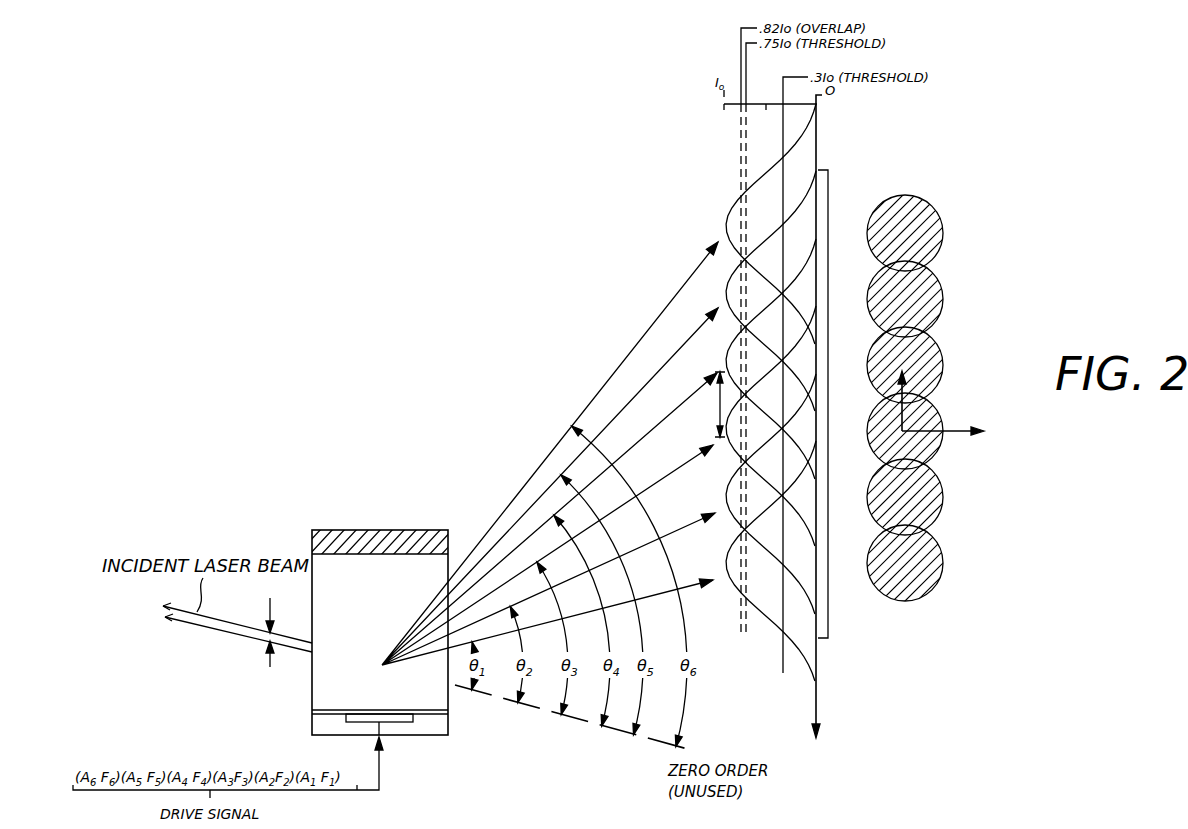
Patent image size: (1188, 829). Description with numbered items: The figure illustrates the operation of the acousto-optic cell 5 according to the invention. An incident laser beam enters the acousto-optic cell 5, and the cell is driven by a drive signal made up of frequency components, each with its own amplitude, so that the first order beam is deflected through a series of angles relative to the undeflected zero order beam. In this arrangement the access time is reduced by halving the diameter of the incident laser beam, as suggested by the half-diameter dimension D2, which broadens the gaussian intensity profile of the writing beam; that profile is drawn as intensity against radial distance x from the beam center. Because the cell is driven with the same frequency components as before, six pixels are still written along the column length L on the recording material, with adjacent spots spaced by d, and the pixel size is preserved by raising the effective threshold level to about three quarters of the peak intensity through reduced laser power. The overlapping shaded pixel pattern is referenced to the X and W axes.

The acousto-optic cell 5 is at (369, 615).
The column length L is at (828, 405).
The spacing between adjacent beam spots d is at (717, 404).
The half beam diameter D2 is at (268, 646).
The X axis of spot array X is at (904, 391).
The W axis of spot array W is at (954, 433).
The radial distance from beam center x is at (813, 427).